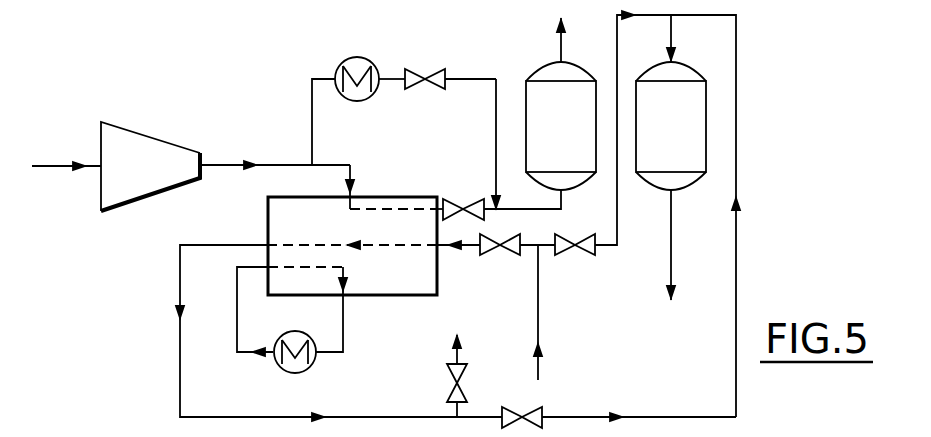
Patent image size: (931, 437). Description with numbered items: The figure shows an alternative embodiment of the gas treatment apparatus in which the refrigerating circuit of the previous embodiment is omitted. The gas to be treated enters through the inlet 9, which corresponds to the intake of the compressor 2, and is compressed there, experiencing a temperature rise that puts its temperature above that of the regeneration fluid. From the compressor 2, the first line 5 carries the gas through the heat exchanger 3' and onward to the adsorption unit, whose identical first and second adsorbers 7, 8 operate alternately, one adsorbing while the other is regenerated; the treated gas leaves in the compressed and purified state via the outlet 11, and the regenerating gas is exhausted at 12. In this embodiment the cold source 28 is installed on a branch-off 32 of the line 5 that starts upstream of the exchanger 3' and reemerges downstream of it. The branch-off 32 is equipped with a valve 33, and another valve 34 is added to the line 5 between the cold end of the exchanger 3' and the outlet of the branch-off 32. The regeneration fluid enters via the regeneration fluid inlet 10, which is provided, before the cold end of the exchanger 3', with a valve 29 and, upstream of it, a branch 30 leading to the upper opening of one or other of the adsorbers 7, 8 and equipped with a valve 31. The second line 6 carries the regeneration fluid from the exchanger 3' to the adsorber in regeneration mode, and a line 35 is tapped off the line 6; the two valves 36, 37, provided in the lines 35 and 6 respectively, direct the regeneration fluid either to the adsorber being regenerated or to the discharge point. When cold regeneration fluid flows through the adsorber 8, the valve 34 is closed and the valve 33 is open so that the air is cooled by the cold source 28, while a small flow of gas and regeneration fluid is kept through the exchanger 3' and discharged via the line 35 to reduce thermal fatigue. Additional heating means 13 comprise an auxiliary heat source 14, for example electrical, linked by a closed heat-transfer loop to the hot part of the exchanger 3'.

The compressor 2 is at (140, 132).
The heat exchanger 3' is at (352, 221).
The first line 5 is at (246, 163).
The second line 6 is at (178, 358).
The first adsorber 7 is at (526, 152).
The second adsorber 8 is at (677, 192).
The inlet for the gas to be treated 9 is at (69, 168).
The regeneration fluid inlet 10 is at (540, 367).
The outlet for the treated gas 11 is at (560, 52).
The regenerating gas exhaust 12 is at (676, 272).
The additional heating means 13 is at (226, 304).
The auxiliary heat source 14 is at (297, 374).
The cold source 28 is at (357, 57).
The valve 29 is at (490, 254).
The branch 30 is at (600, 244).
The valve 31 is at (580, 254).
The branch-off 32 is at (320, 78).
The valve 33 is at (414, 70).
The valve 34 is at (460, 200).
The line 35 is at (462, 362).
The valve 36 is at (452, 384).
The valve 37 is at (535, 408).